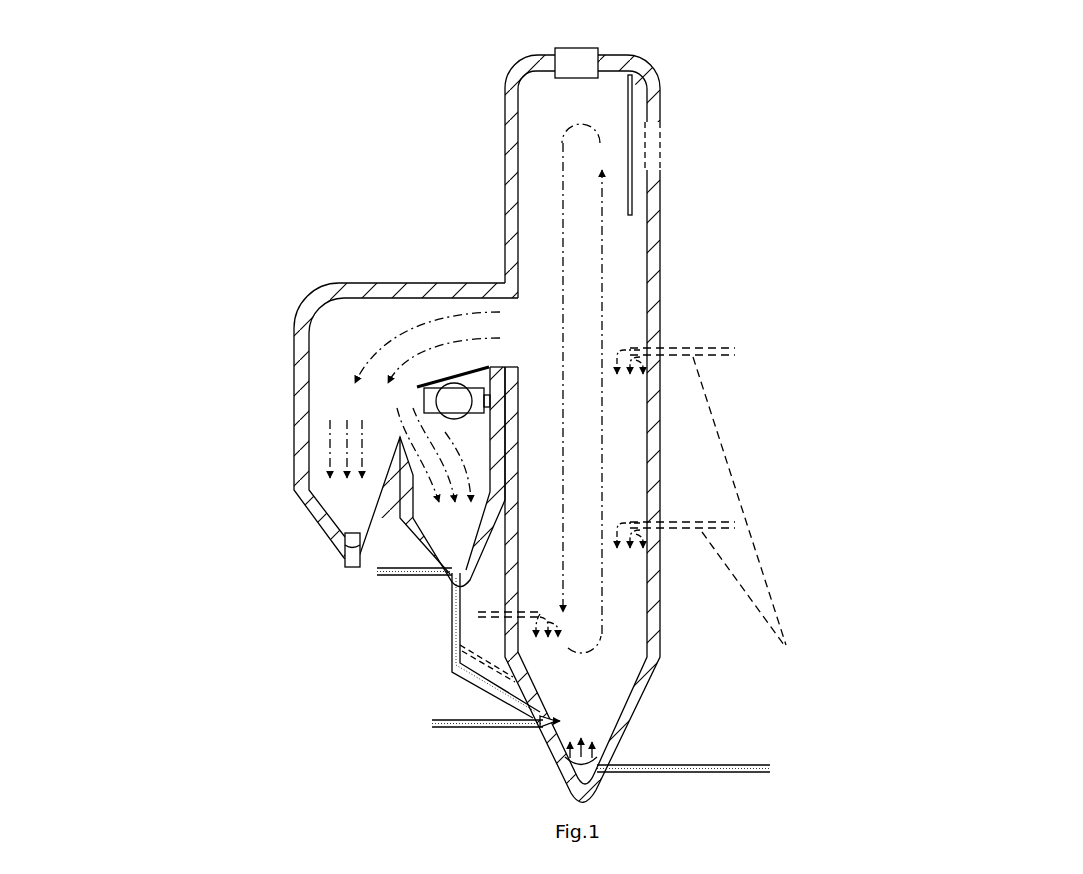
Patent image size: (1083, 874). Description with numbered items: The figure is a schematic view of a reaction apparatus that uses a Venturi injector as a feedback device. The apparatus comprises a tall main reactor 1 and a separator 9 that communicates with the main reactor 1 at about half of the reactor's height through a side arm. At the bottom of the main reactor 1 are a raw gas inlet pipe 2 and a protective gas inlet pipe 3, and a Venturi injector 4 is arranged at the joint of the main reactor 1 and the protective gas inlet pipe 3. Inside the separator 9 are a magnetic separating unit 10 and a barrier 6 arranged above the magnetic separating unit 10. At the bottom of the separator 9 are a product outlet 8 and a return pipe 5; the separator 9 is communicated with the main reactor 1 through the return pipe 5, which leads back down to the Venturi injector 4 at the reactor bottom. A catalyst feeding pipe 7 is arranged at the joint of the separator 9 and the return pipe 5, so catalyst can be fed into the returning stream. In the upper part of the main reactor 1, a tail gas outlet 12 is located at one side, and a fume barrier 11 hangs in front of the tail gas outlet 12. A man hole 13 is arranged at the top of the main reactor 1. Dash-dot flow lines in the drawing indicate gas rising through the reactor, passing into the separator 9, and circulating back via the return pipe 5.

The main reactor 1 is at (635, 311).
The raw gas inlet pipe 2 is at (682, 757).
The protective gas inlet pipe 3 is at (420, 738).
The Venturi injector 4 is at (540, 718).
The return pipe 5 is at (452, 657).
The barrier 6 is at (467, 365).
The catalyst feeding pipe 7 is at (385, 576).
The product outlet 8 is at (345, 560).
The separator 9 is at (320, 466).
The magnetic separating unit 10 is at (424, 400).
The fume barrier 11 is at (635, 185).
The tail gas outlet 12 is at (645, 170).
The man hole 13 is at (580, 47).